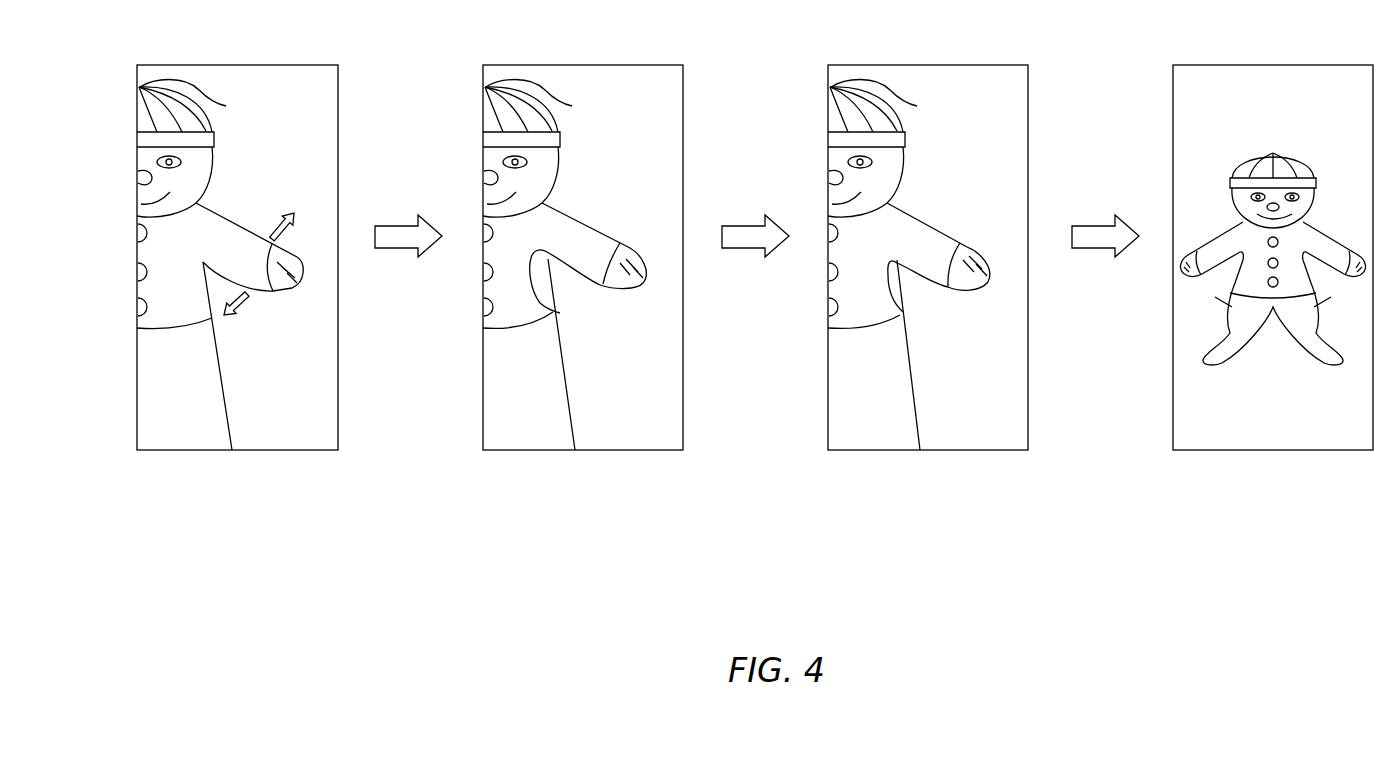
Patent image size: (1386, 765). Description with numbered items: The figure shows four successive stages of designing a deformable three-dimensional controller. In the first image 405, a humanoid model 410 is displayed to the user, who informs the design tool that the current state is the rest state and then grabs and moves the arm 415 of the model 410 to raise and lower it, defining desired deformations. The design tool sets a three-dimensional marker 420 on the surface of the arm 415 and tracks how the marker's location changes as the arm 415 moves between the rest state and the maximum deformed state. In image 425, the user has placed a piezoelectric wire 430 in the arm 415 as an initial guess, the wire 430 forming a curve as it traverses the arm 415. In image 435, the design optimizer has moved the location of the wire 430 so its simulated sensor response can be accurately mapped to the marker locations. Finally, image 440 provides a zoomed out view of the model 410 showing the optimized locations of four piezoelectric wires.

The image 405 is at (240, 65).
The model 410 is at (215, 100).
The arm 415 is at (219, 203).
The 3D marker 420 is at (275, 292).
The image 425 is at (586, 65).
The piezoelectric wire 430 is at (600, 293).
The image 435 is at (931, 65).
The image 440 is at (1276, 65).